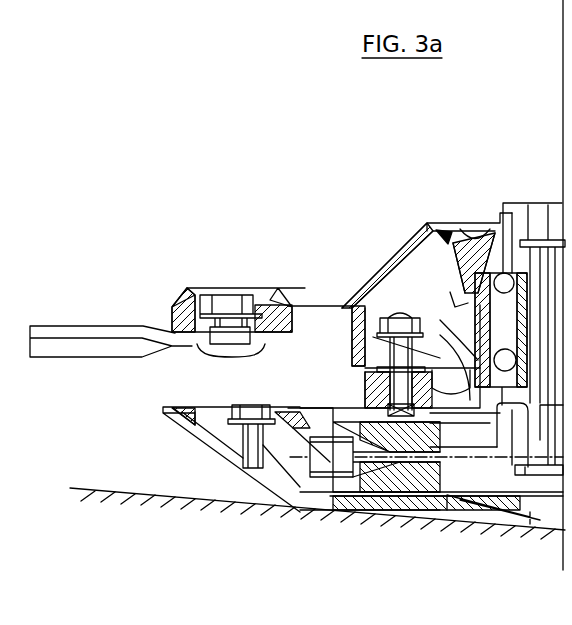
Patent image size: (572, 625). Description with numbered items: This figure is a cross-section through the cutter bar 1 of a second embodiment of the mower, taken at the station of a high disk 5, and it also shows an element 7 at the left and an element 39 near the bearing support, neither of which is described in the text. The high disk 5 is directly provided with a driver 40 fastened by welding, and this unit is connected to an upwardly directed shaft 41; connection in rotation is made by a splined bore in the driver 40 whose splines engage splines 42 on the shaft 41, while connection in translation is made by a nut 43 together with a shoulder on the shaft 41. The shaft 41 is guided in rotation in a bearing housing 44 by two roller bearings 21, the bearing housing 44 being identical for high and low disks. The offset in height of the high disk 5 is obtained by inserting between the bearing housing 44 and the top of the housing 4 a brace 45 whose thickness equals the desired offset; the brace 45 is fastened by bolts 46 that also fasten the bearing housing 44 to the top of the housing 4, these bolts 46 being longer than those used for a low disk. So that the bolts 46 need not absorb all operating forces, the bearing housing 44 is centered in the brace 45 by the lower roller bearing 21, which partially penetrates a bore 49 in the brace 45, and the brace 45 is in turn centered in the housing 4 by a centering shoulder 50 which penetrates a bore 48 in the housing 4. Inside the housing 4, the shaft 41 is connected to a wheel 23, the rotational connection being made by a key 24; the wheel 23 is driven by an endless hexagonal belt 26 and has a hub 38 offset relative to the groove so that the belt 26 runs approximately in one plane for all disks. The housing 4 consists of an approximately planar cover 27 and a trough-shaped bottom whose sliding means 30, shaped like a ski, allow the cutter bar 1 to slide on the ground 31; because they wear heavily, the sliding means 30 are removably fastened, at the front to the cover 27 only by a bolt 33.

The cutter bar 1 is at (228, 182).
The housing 4 is at (512, 532).
The high disk 5 is at (398, 258).
The blade 7 is at (57, 330).
The roller bearings 21 is at (425, 315).
The wheel 23 is at (420, 497).
The key 24 is at (518, 470).
The hexagonal belt 26 is at (310, 497).
The cover 27 is at (300, 408).
The sliding means 30 is at (212, 440).
The ground 31 is at (194, 556).
The bolt 33 is at (250, 405).
The hub 38 is at (510, 447).
The leg 39 is at (352, 330).
The driver 40 is at (463, 243).
The shaft 41 is at (548, 205).
The splines 42 is at (497, 245).
The nut 43 is at (538, 280).
The bearing housing 44 is at (378, 370).
The brace 45 is at (378, 391).
The bolts 46 is at (400, 314).
The bore 48 is at (440, 462).
The bore 49 is at (452, 360).
The centering shoulder 50 is at (500, 462).